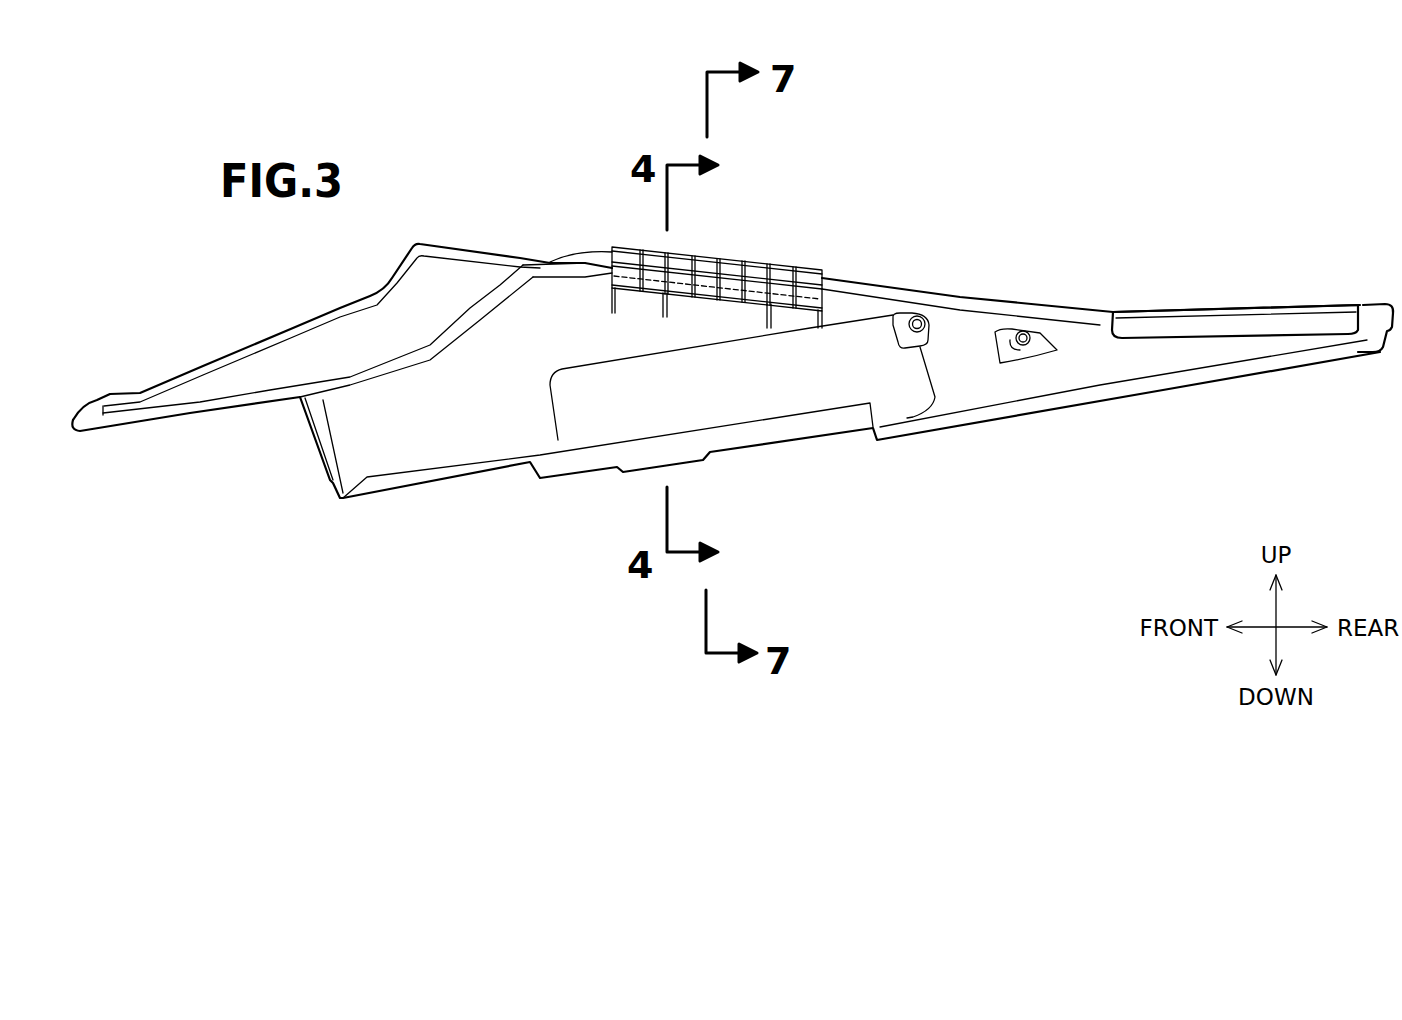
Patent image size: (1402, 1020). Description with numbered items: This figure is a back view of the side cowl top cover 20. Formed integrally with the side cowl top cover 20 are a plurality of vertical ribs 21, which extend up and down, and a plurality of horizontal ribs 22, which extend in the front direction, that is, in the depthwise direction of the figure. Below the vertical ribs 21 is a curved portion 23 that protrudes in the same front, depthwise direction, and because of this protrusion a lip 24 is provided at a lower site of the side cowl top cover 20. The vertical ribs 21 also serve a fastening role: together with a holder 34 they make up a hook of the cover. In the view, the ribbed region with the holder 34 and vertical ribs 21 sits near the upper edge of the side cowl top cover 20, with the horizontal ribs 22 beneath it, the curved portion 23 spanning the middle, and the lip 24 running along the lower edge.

The side cowl top cover 20 is at (992, 133).
The vertical ribs 21 is at (611, 266).
The horizontal ribs 22 is at (652, 292).
The curved portion 23 is at (760, 400).
The lip 24 is at (447, 473).
The holder 34 is at (752, 257).